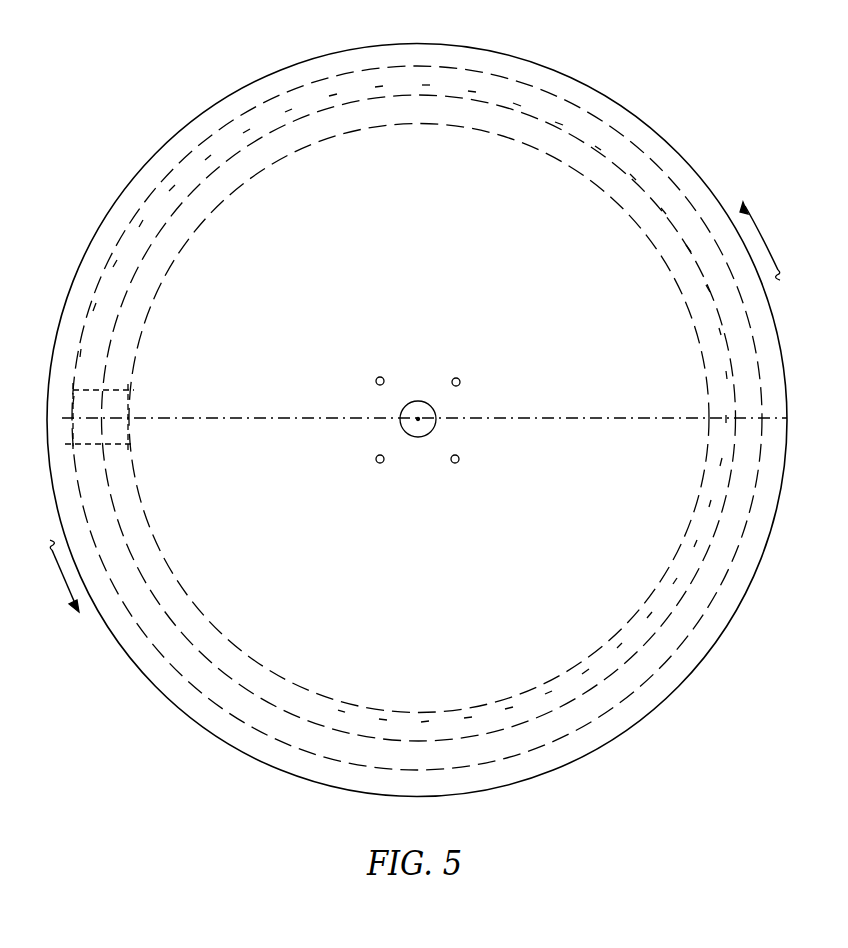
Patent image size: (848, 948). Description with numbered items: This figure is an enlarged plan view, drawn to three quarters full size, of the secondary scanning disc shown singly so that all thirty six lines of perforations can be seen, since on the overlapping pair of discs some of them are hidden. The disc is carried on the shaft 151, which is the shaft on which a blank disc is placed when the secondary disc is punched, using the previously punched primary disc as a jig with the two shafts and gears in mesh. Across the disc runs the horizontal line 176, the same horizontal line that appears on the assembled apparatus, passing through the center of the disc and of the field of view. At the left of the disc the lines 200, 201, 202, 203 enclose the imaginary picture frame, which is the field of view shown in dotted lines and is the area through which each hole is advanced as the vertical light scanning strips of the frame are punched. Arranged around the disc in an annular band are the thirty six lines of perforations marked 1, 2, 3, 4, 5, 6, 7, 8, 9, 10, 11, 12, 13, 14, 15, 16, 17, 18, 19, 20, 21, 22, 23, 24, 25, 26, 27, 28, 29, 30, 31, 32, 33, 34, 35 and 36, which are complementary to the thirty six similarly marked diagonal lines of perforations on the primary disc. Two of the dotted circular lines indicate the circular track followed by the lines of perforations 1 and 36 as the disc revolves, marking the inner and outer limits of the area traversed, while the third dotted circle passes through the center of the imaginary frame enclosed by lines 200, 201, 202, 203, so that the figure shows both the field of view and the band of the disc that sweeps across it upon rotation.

The shaft 151 is at (398, 415).
The horizontal line 176 is at (215, 417).
The picture frame line 200 is at (72, 432).
The picture frame line 201 is at (128, 430).
The picture frame line 202 is at (110, 390).
The picture frame line 203 is at (108, 447).
The line of perforations 1 is at (68, 400).
The line of perforations 2 is at (75, 351).
The line of perforations 3 is at (90, 304).
The line of perforations 4 is at (111, 260).
The line of perforations 5 is at (137, 220).
The line of perforations 6 is at (169, 183).
The line of perforations 7 is at (205, 152).
The line of perforations 8 is at (245, 125).
The line of perforations 9 is at (287, 104).
The line of perforations 10 is at (331, 88).
The line of perforations 11 is at (378, 79).
The line of perforations 12 is at (426, 77).
The line of perforations 13 is at (474, 84).
The line of perforations 14 is at (520, 98).
The line of perforations 15 is at (562, 117).
The line of perforations 16 is at (602, 142).
The line of perforations 17 is at (638, 172).
The line of perforations 18 is at (669, 206).
The line of perforations 19 is at (694, 244).
The line of perforations 20 is at (714, 285).
The line of perforations 21 is at (727, 329).
The line of perforations 22 is at (734, 374).
The line of perforations 23 is at (734, 419).
The line of perforations 24 is at (728, 463).
The line of perforations 25 is at (717, 506).
The line of perforations 26 is at (702, 547).
The line of perforations 27 is at (681, 585).
The line of perforations 28 is at (655, 620).
The line of perforations 29 is at (624, 651).
The line of perforations 30 is at (590, 677).
The line of perforations 31 is at (552, 699).
The line of perforations 32 is at (512, 715).
The line of perforations 33 is at (469, 725).
The line of perforations 34 is at (426, 729).
The line of perforations 35 is at (382, 727).
The line of perforations 36 is at (339, 718).